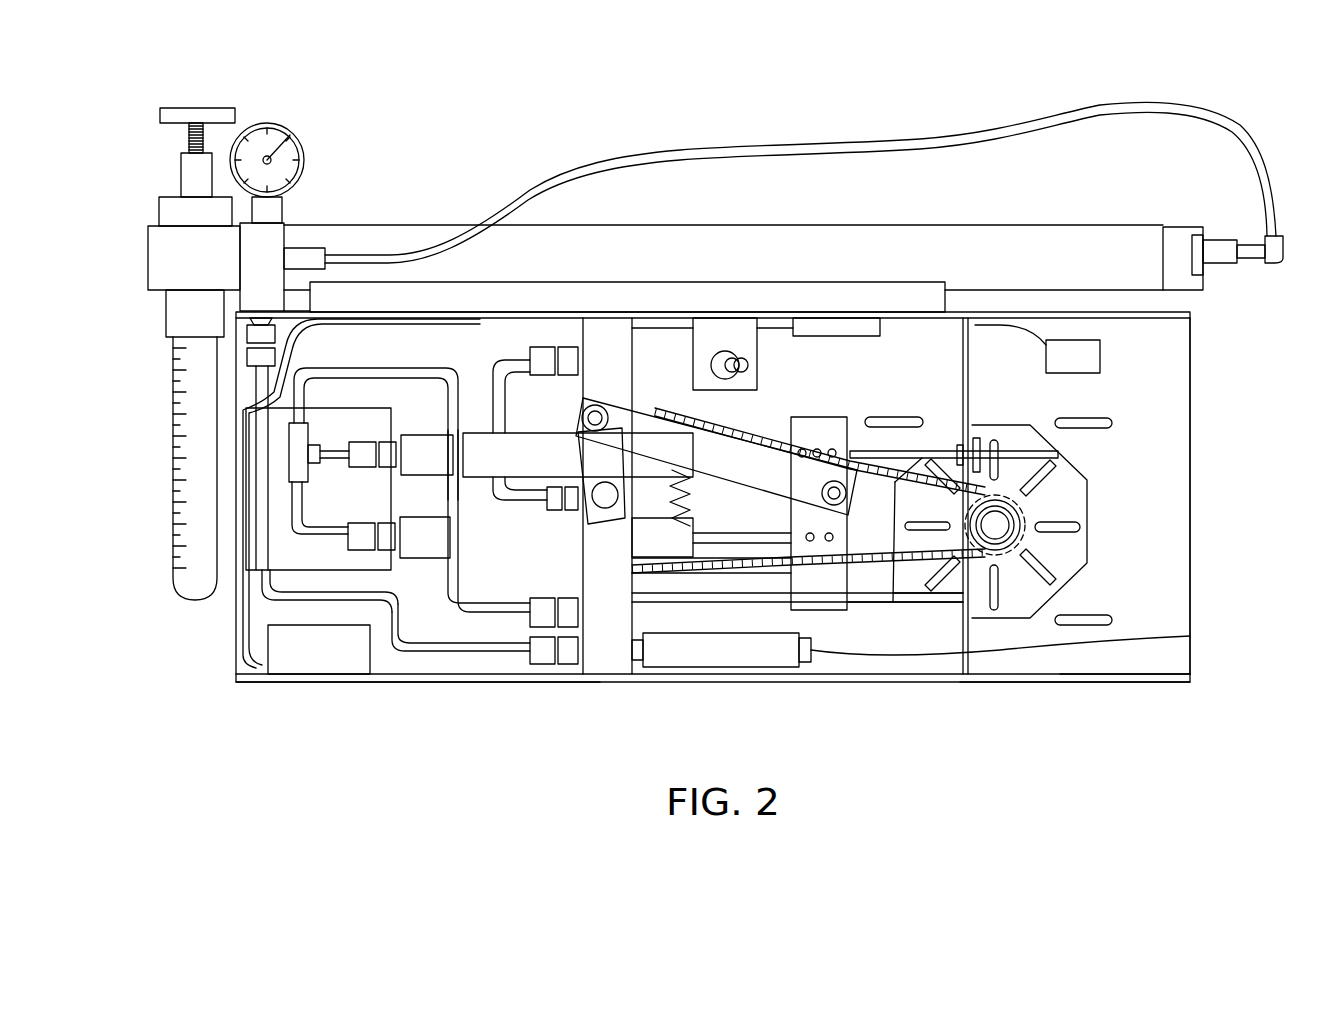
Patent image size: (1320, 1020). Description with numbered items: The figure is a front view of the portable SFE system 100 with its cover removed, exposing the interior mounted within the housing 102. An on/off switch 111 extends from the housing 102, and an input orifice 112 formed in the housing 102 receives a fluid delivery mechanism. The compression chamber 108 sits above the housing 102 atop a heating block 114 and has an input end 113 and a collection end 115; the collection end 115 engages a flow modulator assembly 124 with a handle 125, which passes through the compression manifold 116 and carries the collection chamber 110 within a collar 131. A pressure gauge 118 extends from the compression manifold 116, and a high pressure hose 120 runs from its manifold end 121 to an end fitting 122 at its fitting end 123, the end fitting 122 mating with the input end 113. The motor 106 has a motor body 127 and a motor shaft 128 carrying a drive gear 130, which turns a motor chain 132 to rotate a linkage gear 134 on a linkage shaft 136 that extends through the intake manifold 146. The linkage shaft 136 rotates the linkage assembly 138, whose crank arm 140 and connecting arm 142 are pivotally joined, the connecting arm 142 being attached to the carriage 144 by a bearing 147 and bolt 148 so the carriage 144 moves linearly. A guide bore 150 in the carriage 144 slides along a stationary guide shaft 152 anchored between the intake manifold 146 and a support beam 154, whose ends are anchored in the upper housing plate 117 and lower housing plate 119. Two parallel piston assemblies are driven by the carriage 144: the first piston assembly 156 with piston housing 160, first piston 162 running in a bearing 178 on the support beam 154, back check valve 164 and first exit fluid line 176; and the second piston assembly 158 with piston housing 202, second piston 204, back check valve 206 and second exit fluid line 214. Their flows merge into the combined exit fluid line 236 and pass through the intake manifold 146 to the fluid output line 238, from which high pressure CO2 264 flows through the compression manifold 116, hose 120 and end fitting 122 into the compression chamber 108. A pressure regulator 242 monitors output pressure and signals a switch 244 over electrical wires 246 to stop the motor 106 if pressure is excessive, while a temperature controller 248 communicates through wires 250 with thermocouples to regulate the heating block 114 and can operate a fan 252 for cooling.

The portable SFE system 100 is at (272, 702).
The housing 102 is at (1170, 640).
The motor 106 is at (1070, 540).
The compression chamber 108 is at (560, 245).
The collection chamber 110 is at (195, 555).
The on/off switch 111 is at (735, 348).
The input orifice 112 is at (608, 310).
The input end 113 is at (1148, 252).
The heating block 114 is at (890, 295).
The collection end 115 is at (300, 226).
The compression manifold 116 is at (262, 242).
The upper housing plate 117 is at (1165, 330).
The pressure gauge 118 is at (300, 140).
The lower housing plate 119 is at (1110, 680).
The high pressure hose 120 is at (798, 147).
The manifold end 121 is at (305, 258).
The end fitting 122 is at (1180, 255).
The fitting end 123 is at (1265, 262).
The flow modulator assembly 124 is at (159, 218).
The handle 125 is at (165, 115).
The motor body 127 is at (1065, 440).
The motor shaft 128 is at (1000, 525).
The drive gear 130 is at (1020, 560).
The collar 131 is at (185, 313).
The motor chain 132 is at (910, 586).
The linkage gear 134 is at (680, 500).
The linkage shaft 136 is at (605, 560).
The linkage assembly 138 is at (565, 408).
The crank arm 140 is at (597, 453).
The connecting arm 142 is at (695, 450).
The carriage 144 is at (818, 592).
The intake manifold 146 is at (620, 652).
The bearing 147 is at (865, 440).
The bolt 148 is at (822, 482).
The guide bore 150 is at (762, 612).
The guide shaft 152 is at (925, 596).
The support beam 154 is at (1030, 640).
The first piston assembly 156 is at (437, 412).
The second piston assembly 158 is at (420, 562).
The piston housing 160 is at (480, 425).
The first piston 162 is at (785, 450).
The back check valve 164 is at (392, 460).
The first exit fluid line 176 is at (356, 456).
The bearing 178 is at (965, 405).
The piston housing 202 is at (500, 540).
The second piston 204 is at (730, 540).
The back check valve 206 is at (385, 560).
The second exit fluid line 214 is at (302, 530).
The combined exit fluid line 236 is at (415, 370).
The fluid output line 238 is at (455, 655).
The pressure regulator 242 is at (715, 648).
The switch 244 is at (1085, 360).
The electrical wires 246 is at (870, 652).
The temperature controller 248 is at (315, 650).
The wires 250 is at (262, 612).
The fan 252 is at (272, 555).
The high pressure CO2 264 is at (262, 448).